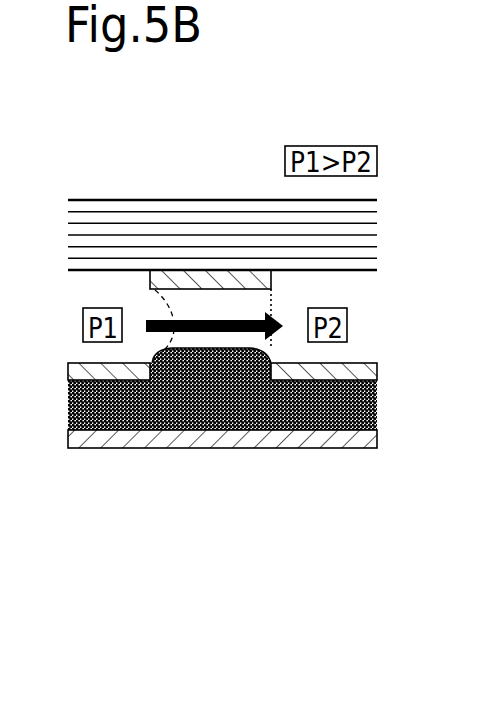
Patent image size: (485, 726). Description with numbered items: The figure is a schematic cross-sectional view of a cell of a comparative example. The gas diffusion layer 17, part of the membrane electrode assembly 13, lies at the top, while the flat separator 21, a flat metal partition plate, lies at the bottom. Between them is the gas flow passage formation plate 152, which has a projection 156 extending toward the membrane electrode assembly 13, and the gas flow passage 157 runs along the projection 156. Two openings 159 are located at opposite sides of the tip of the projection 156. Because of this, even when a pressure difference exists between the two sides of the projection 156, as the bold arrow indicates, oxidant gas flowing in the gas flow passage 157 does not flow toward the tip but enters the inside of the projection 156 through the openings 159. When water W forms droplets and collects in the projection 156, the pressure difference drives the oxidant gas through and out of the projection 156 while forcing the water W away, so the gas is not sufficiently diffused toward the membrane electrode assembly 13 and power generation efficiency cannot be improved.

The gas diffusion layer 17 is at (222, 196).
The membrane electrode assembly 13 is at (103, 200).
The projection 156 is at (207, 270).
The gas flow passage 157 is at (90, 287).
The gas flow passage formation plate 152 is at (345, 363).
The openings 159 is at (148, 349).
The water W is at (217, 413).
The flat separator 21 is at (357, 452).